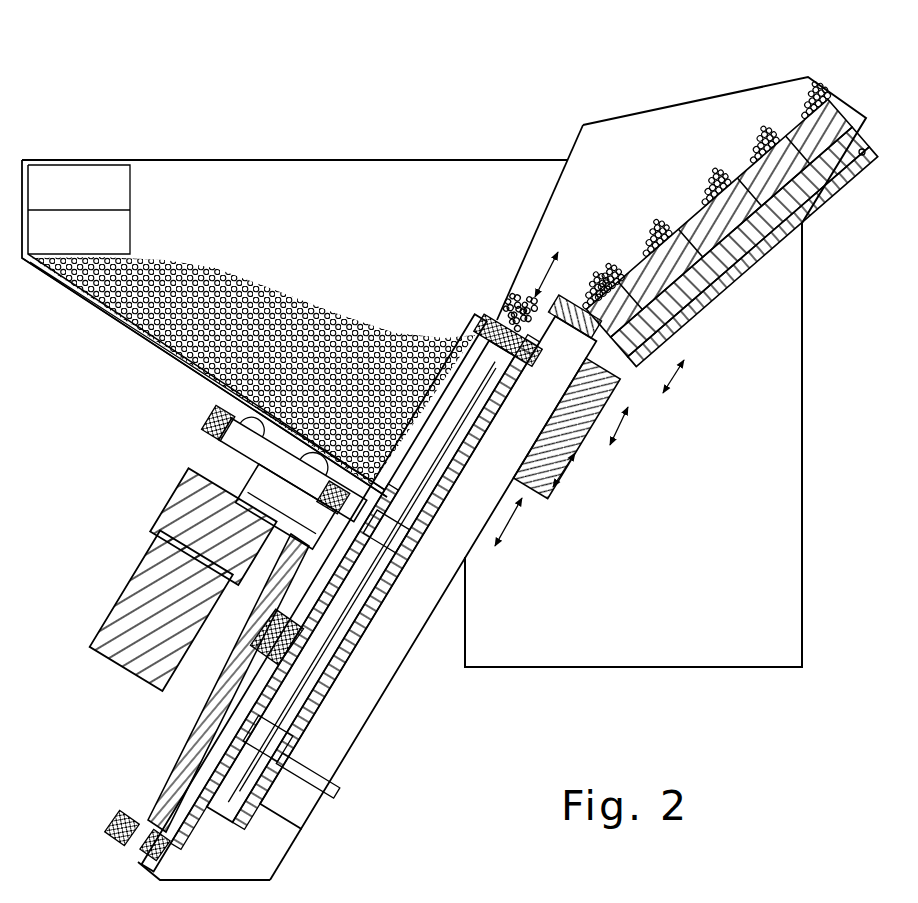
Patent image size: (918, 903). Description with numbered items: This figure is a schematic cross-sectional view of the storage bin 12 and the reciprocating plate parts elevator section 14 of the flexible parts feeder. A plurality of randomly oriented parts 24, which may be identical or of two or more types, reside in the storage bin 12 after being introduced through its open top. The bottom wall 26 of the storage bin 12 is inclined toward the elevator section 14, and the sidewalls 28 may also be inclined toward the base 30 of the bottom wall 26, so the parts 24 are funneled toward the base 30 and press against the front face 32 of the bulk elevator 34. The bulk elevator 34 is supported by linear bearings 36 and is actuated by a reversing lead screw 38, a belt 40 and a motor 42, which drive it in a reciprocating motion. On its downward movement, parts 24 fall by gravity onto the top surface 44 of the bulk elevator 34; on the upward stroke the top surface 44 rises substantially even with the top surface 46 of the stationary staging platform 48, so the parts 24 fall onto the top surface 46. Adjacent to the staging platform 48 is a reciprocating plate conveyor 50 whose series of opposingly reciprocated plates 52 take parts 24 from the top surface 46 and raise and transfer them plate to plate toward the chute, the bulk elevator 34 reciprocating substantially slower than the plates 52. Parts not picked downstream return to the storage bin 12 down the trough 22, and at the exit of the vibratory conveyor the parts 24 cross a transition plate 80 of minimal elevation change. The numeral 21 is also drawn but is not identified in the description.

The storage bin 12 is at (301, 200).
The reciprocating plate parts elevator section 14 is at (694, 102).
The belt travel direction arrow 21 is at (546, 284).
The trough 22 is at (590, 316).
The randomly oriented parts 24 is at (227, 283).
The bottom wall 26 is at (136, 345).
The sidewalls 28 is at (343, 158).
The base 30 is at (274, 522).
The front face 32 is at (464, 328).
The bulk elevator 34 is at (486, 318).
The linear bearings 36 is at (396, 556).
The reversing lead screw 38 is at (202, 718).
The belt 40 is at (232, 440).
The motor 42 is at (142, 560).
The top surface 44 is at (494, 318).
The top surface 46 is at (578, 290).
The staging platform 48 is at (468, 480).
The reciprocating plate conveyor 50 is at (744, 308).
The reciprocating plates 52 is at (668, 352).
The transition plate 80 is at (844, 150).